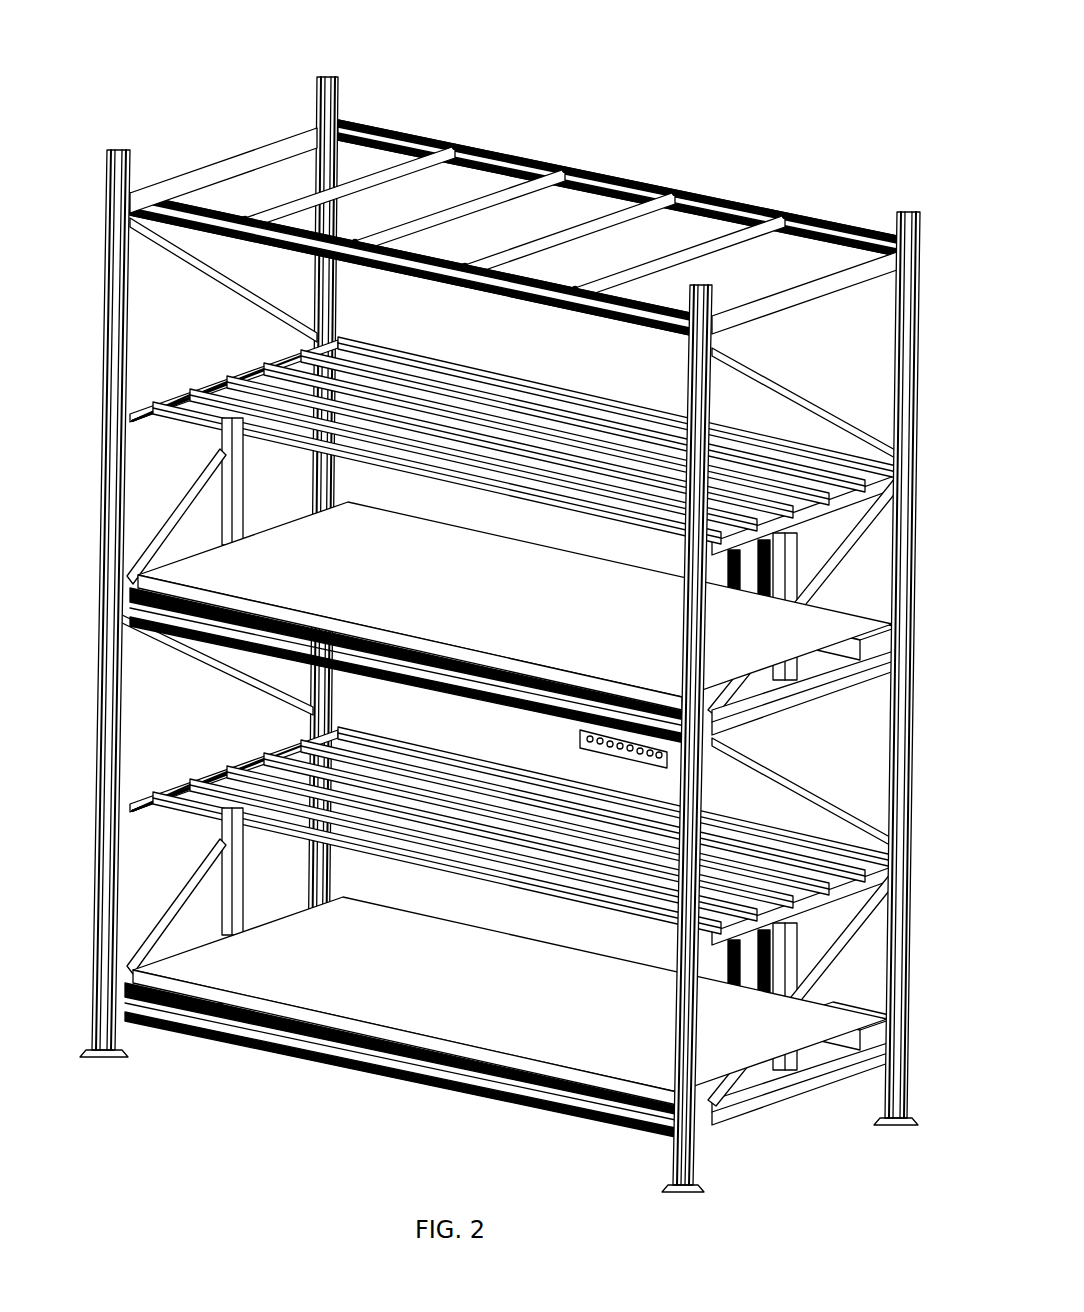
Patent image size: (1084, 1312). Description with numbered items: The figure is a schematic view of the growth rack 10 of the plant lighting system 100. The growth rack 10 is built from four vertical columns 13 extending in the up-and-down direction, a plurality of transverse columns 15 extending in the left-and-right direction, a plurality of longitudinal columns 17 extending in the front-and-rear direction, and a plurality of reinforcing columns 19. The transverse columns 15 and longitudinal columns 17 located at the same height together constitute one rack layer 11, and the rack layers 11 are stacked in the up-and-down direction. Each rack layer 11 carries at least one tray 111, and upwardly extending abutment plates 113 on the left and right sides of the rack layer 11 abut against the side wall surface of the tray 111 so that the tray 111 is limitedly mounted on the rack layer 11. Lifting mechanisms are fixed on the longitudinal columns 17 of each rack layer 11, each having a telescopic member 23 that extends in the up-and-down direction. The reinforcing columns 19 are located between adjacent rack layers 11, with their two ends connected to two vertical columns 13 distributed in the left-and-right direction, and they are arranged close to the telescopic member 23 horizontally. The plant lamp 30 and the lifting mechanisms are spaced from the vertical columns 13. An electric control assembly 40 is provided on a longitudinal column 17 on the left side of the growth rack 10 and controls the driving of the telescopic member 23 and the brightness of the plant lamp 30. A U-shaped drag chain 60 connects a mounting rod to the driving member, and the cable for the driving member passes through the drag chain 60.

The plant lighting system 100 is at (542, 32).
The growth rack 10 is at (104, 208).
The rack layer 11 is at (397, 45).
The vertical column 13 is at (107, 312).
The transverse column 15 is at (284, 152).
The longitudinal column 17 is at (278, 224).
The reinforcing column 19 is at (870, 431).
The telescopic member 23 is at (222, 478).
The plant lamp 30 is at (135, 430).
The electric control assembly 40 is at (690, 743).
The drag chain 60 is at (830, 618).
The tray 111 is at (138, 578).
The abutment plate 113 is at (240, 216).